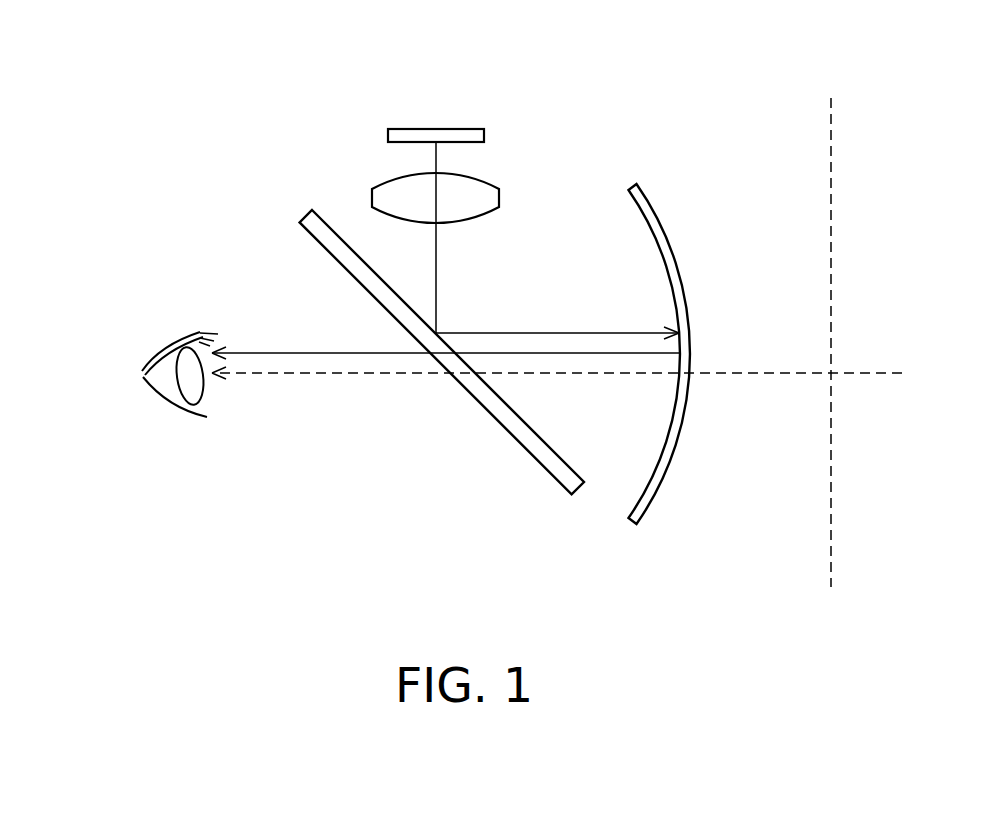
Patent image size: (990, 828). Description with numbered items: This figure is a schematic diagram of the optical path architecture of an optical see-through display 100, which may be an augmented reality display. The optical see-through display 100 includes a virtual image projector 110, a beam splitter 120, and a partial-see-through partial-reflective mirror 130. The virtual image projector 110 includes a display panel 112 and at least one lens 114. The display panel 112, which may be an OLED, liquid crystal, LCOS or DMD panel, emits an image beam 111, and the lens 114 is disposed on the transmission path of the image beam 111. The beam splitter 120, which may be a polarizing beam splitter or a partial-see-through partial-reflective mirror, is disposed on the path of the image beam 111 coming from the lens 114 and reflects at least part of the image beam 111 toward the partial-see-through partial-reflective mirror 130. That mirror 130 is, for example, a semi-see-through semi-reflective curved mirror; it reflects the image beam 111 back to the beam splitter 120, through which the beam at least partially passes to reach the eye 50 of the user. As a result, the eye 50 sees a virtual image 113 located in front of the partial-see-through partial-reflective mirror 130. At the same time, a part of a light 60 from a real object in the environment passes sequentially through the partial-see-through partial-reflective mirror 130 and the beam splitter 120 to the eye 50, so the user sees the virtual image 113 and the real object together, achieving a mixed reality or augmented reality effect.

The optical see-through display 100 is at (300, 492).
The virtual image projector 110 is at (635, 62).
The image beam 111 is at (437, 268).
The display panel 112 is at (484, 135).
The virtual image 113 is at (831, 112).
The lens 114 is at (494, 184).
The beam splitter 120 is at (532, 455).
The partial-see-through partial-reflective mirror 130 is at (652, 208).
The eye 50 is at (167, 400).
The light 60 is at (889, 376).